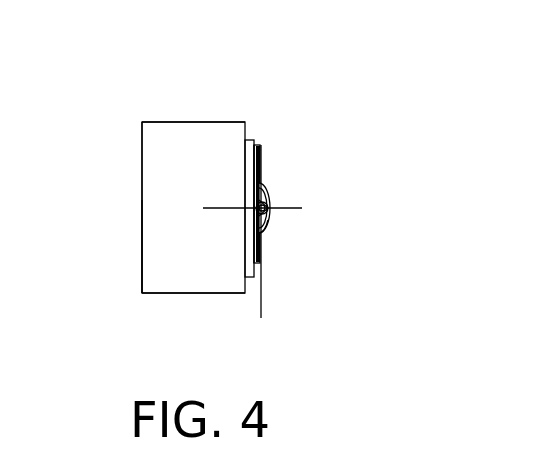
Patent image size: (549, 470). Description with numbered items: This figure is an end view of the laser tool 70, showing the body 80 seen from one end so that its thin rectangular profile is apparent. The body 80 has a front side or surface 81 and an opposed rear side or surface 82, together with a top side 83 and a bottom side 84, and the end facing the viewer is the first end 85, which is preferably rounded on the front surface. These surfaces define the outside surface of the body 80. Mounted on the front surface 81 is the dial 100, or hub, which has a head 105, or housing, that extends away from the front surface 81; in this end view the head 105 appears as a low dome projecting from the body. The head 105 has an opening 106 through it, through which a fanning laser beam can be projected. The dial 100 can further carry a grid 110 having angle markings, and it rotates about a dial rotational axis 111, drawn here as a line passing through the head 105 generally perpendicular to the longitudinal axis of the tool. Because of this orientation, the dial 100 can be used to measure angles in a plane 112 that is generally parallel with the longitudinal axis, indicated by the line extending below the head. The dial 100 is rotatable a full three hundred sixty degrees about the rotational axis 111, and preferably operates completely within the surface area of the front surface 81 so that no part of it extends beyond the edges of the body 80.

The laser tool 70 is at (238, 100).
The body 80 is at (195, 121).
The front side or surface 81 is at (248, 126).
The rear side or surface 82 is at (142, 222).
The top side 83 is at (160, 122).
The bottom side 84 is at (162, 295).
The first end 85 is at (162, 163).
The dial 100 is at (255, 168).
The head 105 is at (268, 195).
The opening 106 is at (265, 228).
The grid 110 is at (258, 157).
The dial rotational axis 111 is at (290, 209).
The plane 112 is at (262, 303).